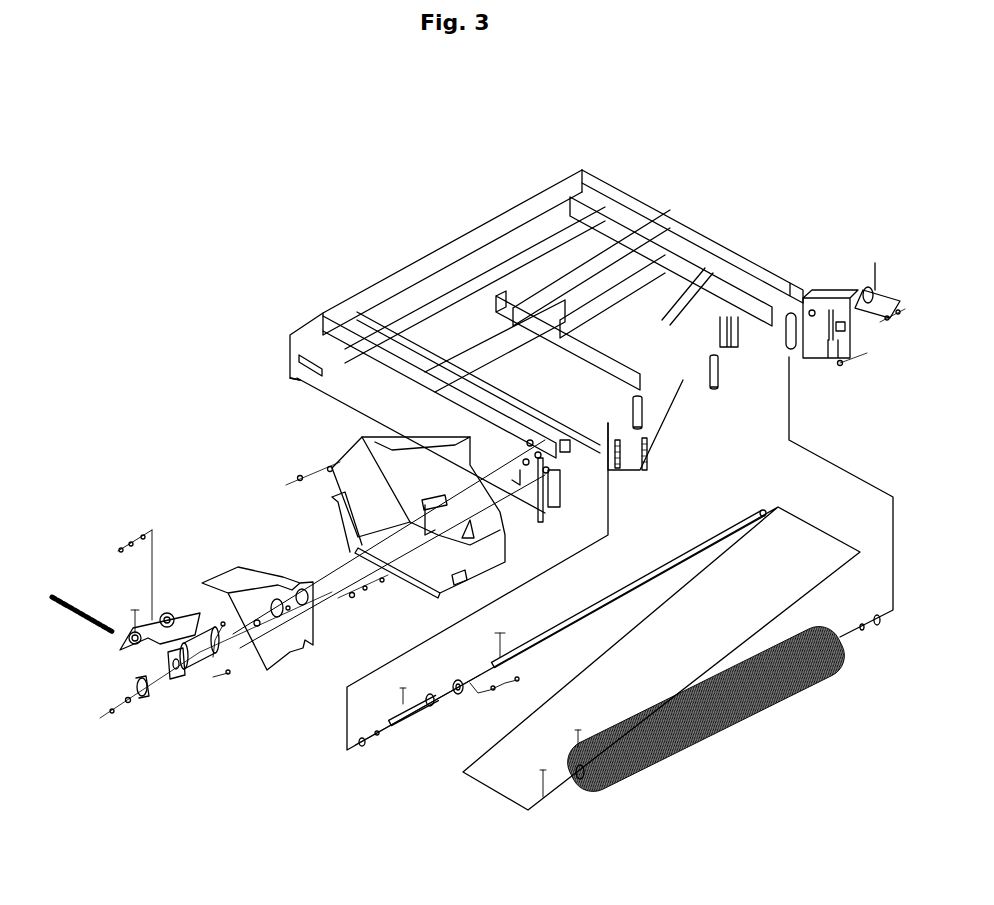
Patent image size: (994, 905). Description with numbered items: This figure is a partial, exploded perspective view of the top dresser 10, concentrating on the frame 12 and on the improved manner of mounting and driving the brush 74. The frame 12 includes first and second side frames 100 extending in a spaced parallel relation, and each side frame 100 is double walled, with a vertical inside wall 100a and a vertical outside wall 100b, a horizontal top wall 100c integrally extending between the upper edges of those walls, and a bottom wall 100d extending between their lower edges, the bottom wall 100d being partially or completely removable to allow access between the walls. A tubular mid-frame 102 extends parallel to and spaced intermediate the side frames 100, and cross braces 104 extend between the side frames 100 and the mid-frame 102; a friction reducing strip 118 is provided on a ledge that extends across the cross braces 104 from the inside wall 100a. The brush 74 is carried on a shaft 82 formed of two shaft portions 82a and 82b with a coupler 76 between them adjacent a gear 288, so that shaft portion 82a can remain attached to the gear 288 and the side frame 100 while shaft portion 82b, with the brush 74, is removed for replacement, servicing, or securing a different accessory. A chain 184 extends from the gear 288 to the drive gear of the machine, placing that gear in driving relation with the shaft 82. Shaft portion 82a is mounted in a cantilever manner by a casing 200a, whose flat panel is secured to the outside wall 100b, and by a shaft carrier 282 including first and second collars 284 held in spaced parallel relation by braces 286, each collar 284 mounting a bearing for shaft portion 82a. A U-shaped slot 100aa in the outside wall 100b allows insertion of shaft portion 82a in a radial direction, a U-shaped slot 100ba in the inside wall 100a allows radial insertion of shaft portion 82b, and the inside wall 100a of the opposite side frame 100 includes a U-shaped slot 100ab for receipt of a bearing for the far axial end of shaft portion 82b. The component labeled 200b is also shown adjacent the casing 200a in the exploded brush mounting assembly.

The top dresser 10 is at (640, 137).
The frame 12 is at (338, 392).
The brush 74 is at (686, 743).
The coupler 76 is at (459, 693).
The shaft 82 is at (675, 545).
The shaft portion 82a is at (412, 706).
The shaft portion 82b is at (586, 612).
The side frame 100 is at (677, 222).
The inside wall 100a is at (647, 233).
The U-shaped slot 100aa is at (563, 452).
The U-shaped slot 100ab is at (813, 311).
The outside wall 100b is at (373, 390).
The U-shaped slot 100ba is at (539, 447).
The top wall 100c is at (347, 347).
The bottom wall 100d is at (835, 347).
The tubular mid-frame 102 is at (513, 297).
The cross braces 104 is at (620, 288).
The friction reducing strip 118 is at (708, 280).
The chain 184 is at (83, 608).
The casing 200a is at (280, 668).
The hopper chute 200b is at (418, 578).
The shaft carrier 282 is at (175, 696).
The collars 284 is at (213, 655).
The braces 286 is at (201, 672).
The gear 288 is at (133, 638).